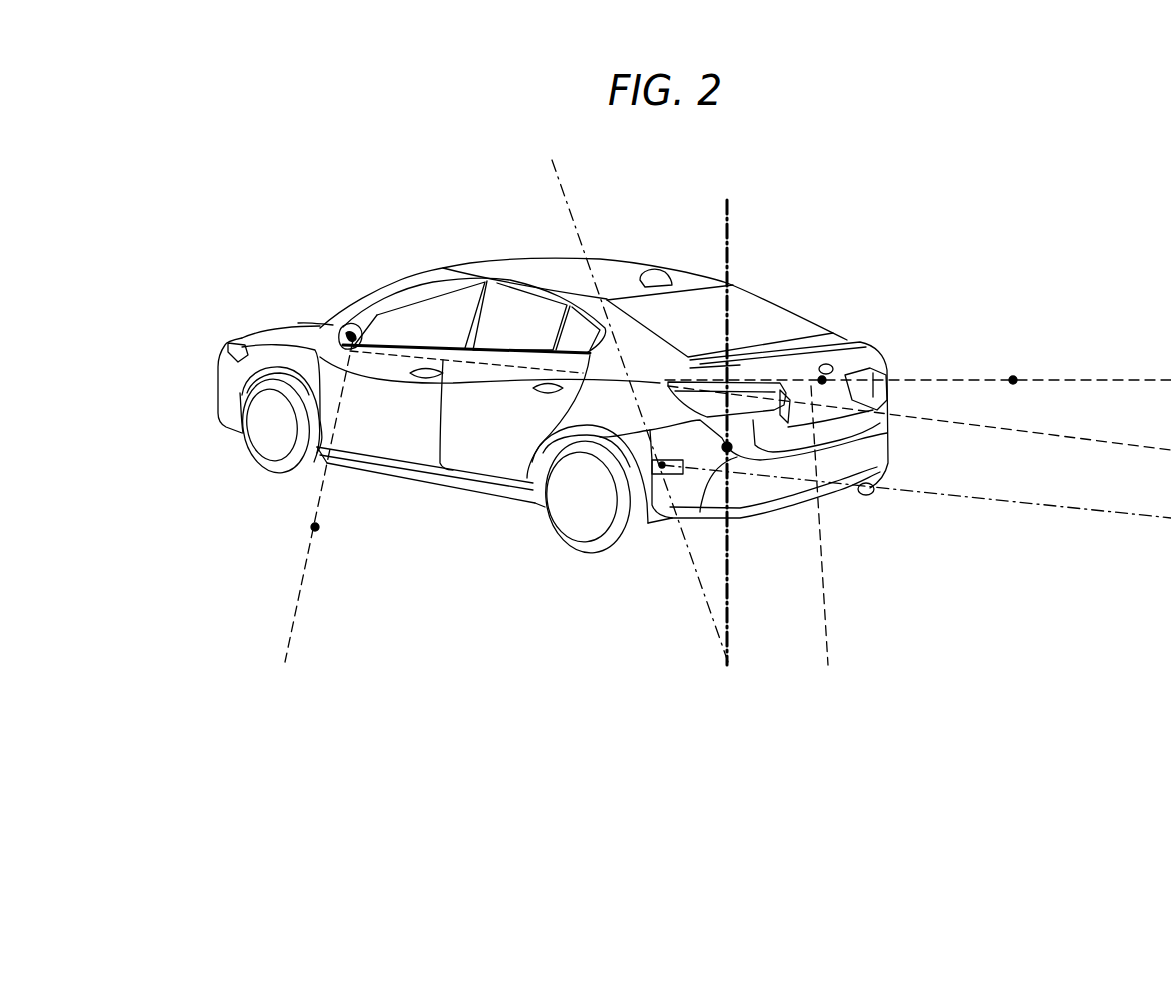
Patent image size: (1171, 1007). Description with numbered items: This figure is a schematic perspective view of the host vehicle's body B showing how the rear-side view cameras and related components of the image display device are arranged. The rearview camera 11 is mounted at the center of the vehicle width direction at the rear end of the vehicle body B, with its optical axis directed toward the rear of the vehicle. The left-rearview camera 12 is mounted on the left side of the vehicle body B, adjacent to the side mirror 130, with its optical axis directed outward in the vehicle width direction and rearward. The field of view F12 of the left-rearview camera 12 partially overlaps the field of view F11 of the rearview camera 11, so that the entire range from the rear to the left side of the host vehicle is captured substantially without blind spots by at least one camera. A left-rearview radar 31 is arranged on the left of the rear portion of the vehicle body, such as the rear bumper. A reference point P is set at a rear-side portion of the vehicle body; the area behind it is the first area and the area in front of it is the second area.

The vehicle body B is at (458, 237).
The side mirror 130 is at (350, 327).
The left-rearview camera 12 is at (298, 323).
The left-rearview radar 31 is at (632, 398).
The reference point P is at (727, 447).
The rearview camera 11 is at (826, 364).
The field of view of the rearview camera F11 is at (1013, 380).
The field of view of the left-rearview camera F12 is at (313, 526).